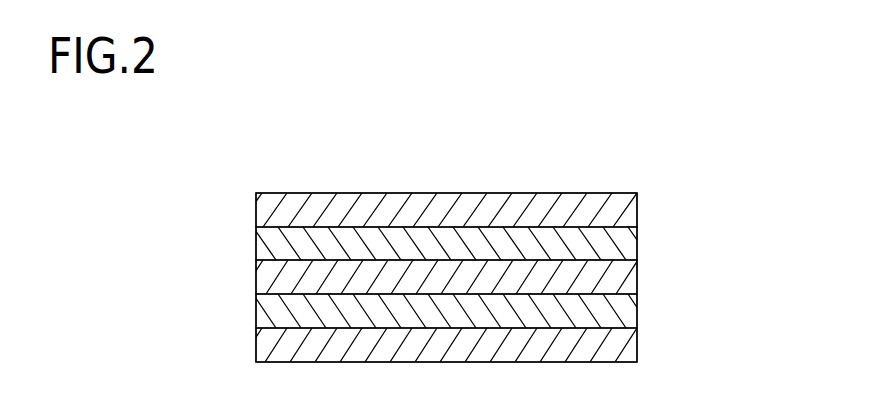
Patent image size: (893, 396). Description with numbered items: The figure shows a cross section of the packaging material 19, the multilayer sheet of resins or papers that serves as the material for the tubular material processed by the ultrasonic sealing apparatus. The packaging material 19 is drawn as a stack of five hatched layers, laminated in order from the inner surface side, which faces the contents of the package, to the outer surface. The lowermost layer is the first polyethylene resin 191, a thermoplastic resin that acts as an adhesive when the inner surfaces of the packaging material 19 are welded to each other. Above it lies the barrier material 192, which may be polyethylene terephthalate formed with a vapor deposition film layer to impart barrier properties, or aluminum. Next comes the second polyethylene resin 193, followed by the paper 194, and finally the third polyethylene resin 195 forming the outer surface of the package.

The packaging material 19 is at (462, 171).
The first polyethylene resin 191 is at (639, 345).
The barrier material 192 is at (639, 310).
The second polyethylene resin 193 is at (639, 278).
The paper 194 is at (639, 243).
The third polyethylene resin 195 is at (639, 212).